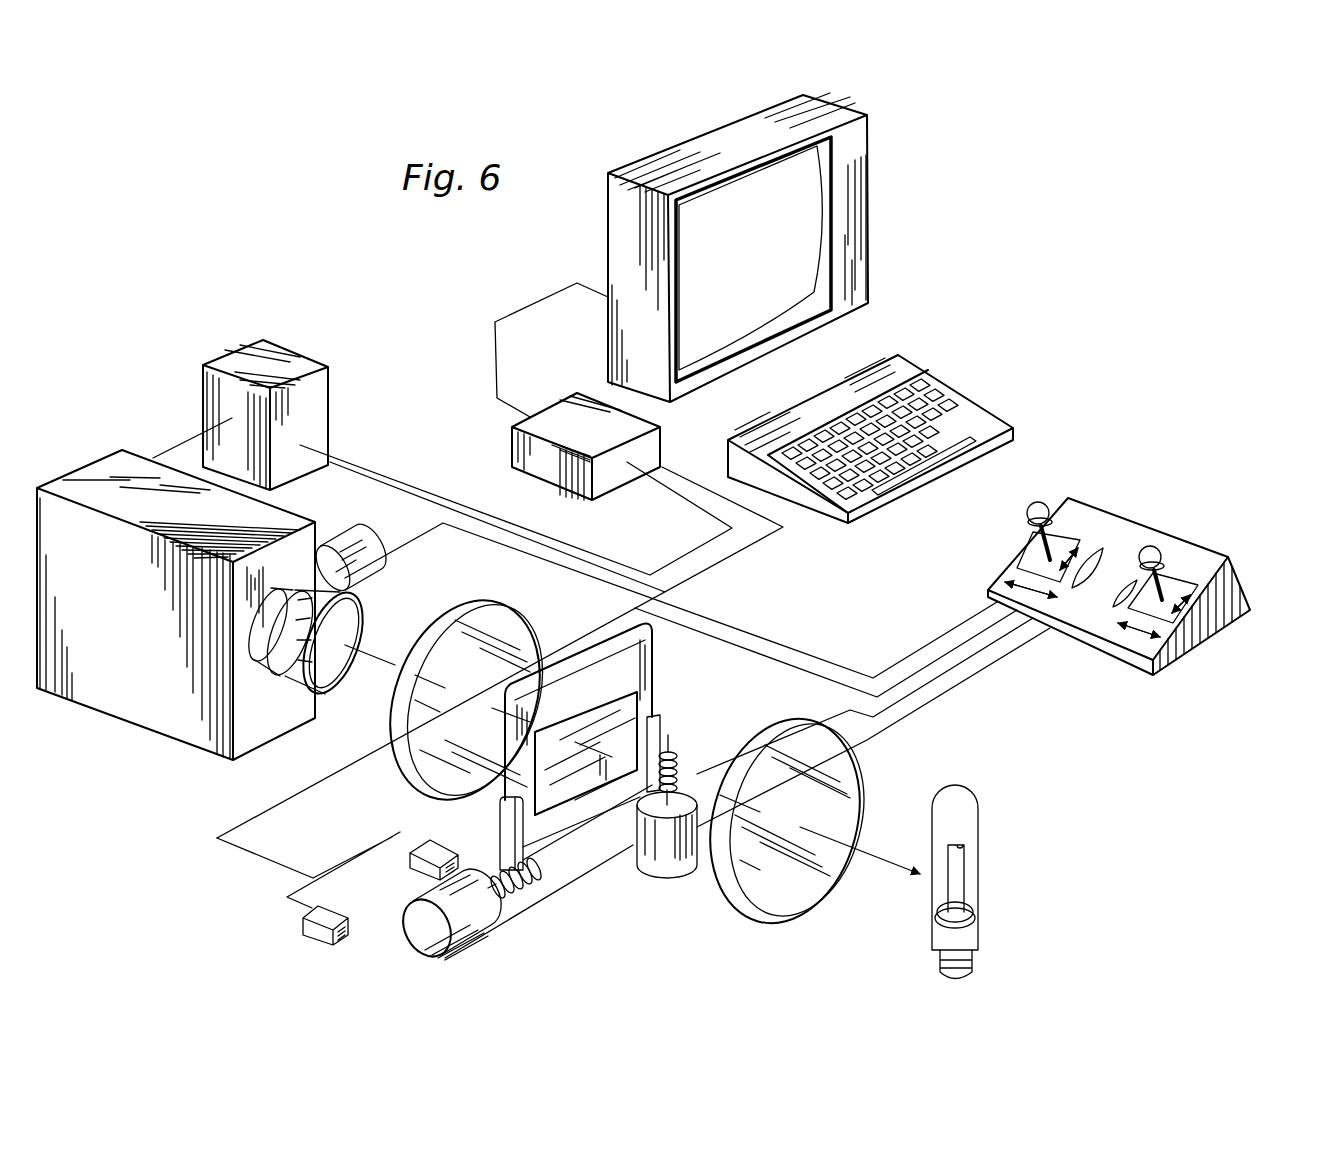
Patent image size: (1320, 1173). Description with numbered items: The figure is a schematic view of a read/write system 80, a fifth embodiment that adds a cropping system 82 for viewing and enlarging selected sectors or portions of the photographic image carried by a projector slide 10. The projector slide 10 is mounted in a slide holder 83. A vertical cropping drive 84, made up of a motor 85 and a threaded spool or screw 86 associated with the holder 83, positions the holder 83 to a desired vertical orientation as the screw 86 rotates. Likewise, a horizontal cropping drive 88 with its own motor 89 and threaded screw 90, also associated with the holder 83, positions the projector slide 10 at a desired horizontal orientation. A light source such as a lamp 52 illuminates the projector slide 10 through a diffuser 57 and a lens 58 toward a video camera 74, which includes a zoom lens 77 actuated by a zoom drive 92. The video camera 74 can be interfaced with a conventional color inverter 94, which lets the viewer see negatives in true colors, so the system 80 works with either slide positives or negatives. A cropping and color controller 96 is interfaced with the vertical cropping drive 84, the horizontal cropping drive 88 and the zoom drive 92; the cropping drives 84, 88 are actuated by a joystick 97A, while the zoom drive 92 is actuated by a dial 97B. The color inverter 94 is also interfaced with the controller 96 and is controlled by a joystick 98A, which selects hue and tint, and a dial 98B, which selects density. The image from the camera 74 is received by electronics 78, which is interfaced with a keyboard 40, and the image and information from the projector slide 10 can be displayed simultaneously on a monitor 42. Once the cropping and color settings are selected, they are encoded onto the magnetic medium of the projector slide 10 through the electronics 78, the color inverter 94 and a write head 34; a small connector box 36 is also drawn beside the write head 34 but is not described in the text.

The projector slide 10 is at (655, 655).
The write head 34 is at (436, 842).
The connector box 36 is at (322, 912).
The keyboard 40 is at (940, 388).
The monitor 42 is at (856, 246).
The lamp 52 is at (975, 925).
The diffuser 57 is at (848, 797).
The lens 58 is at (484, 620).
The video camera 74 is at (137, 682).
The zoom lens 77 is at (372, 635).
The electronics 78 is at (512, 432).
The system 80 is at (1092, 395).
The cropping system 82 is at (618, 870).
The slide holder 83 is at (500, 845).
The vertical cropping drive 84 is at (695, 808).
The motor 85 is at (690, 870).
The threaded screw 86 is at (676, 745).
The horizontal cropping drive 88 is at (448, 923).
The motor 89 is at (446, 950).
The threaded screw 90 is at (528, 893).
The zoom drive 92 is at (345, 548).
The color inverter 94 is at (285, 355).
The cropping and color controller 96 is at (1119, 566).
The joystick 97A is at (1047, 512).
The dial 97B is at (1100, 548).
The joystick 98A is at (1160, 550).
The dial 98B is at (1112, 590).